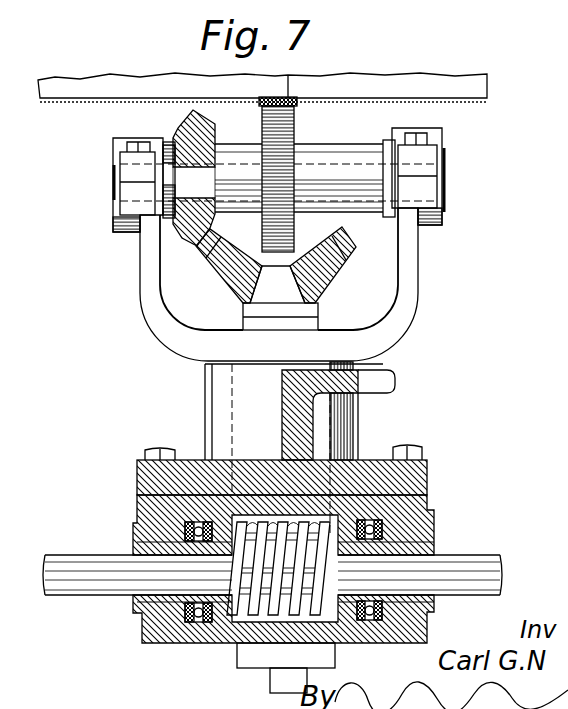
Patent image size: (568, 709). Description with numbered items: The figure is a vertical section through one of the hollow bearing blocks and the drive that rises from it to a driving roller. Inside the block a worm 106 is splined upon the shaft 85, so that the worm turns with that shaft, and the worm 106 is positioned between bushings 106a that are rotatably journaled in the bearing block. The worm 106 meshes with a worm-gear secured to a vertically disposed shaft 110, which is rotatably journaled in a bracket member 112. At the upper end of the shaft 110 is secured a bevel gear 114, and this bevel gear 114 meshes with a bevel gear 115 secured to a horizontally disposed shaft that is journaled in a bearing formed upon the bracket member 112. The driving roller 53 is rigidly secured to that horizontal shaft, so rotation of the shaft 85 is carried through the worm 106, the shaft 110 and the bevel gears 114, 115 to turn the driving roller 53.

The driving roller 53 is at (297, 128).
The bevel gear 115 is at (212, 119).
The bevel gear 114 is at (338, 266).
The bracket member 112 is at (419, 277).
The bushings 106a is at (426, 510).
The worm 106 is at (333, 617).
The shaft 85 is at (477, 555).
The vertically disposed shaft 110 is at (272, 681).